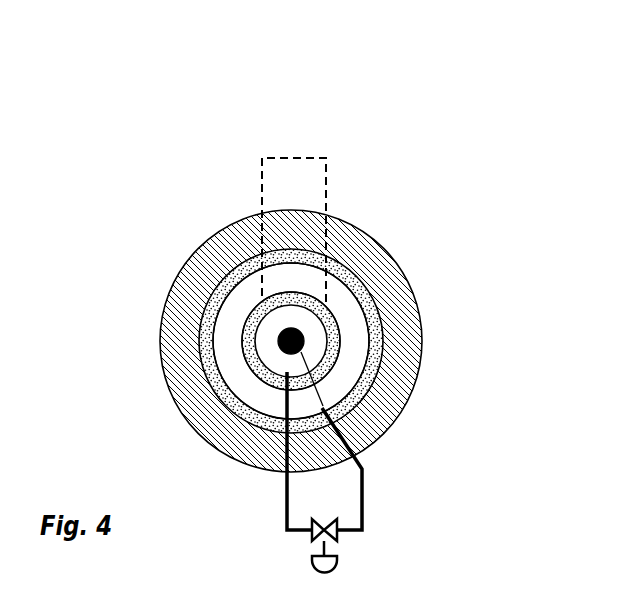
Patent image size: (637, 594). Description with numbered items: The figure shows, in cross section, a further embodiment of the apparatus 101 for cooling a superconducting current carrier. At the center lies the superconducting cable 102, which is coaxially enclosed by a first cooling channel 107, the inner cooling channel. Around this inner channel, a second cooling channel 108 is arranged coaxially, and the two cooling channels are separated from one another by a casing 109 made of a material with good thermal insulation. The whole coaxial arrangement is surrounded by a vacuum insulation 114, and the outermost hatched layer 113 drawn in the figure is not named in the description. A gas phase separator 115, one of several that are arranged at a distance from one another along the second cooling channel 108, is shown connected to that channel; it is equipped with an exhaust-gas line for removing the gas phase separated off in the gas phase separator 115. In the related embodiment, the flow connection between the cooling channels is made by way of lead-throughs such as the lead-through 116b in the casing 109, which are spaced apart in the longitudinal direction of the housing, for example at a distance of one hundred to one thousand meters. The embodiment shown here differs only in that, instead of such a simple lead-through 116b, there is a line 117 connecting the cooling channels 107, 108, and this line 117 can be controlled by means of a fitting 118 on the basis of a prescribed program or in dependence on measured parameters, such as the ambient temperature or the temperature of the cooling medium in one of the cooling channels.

The apparatus 101 is at (102, 105).
The superconducting cable 102 is at (302, 353).
The first cooling channel 107 is at (357, 369).
The second cooling channel 108 is at (352, 338).
The casing 109 is at (385, 352).
The insulation layer 113 is at (390, 293).
The vacuum insulation 114 is at (390, 248).
The gas phase separator 115 is at (327, 183).
The lead-through 116b is at (367, 440).
The line 117 is at (364, 495).
The fitting 118 is at (337, 537).